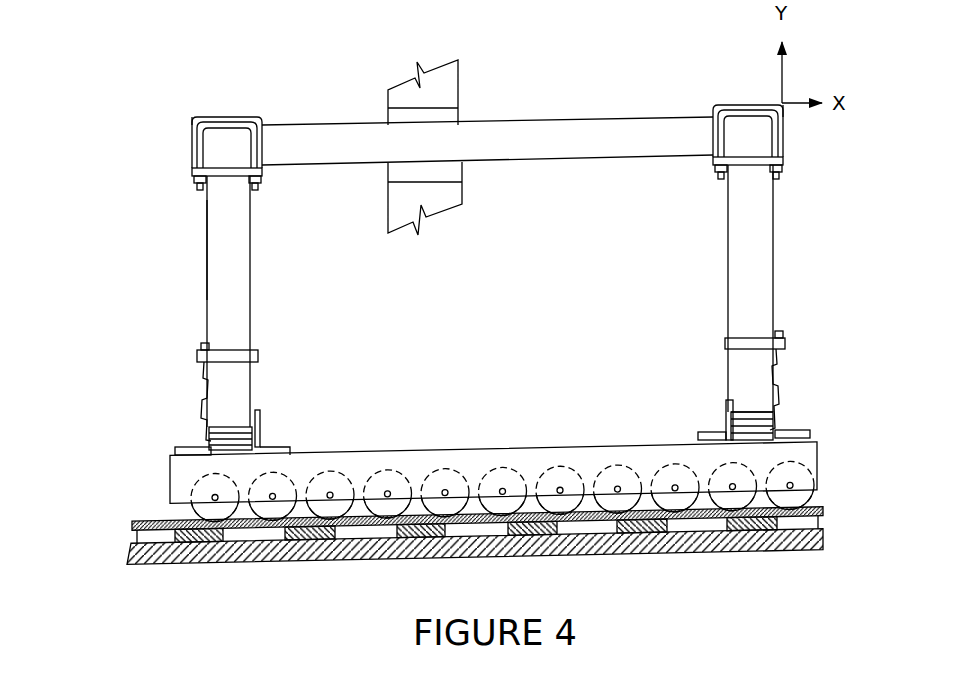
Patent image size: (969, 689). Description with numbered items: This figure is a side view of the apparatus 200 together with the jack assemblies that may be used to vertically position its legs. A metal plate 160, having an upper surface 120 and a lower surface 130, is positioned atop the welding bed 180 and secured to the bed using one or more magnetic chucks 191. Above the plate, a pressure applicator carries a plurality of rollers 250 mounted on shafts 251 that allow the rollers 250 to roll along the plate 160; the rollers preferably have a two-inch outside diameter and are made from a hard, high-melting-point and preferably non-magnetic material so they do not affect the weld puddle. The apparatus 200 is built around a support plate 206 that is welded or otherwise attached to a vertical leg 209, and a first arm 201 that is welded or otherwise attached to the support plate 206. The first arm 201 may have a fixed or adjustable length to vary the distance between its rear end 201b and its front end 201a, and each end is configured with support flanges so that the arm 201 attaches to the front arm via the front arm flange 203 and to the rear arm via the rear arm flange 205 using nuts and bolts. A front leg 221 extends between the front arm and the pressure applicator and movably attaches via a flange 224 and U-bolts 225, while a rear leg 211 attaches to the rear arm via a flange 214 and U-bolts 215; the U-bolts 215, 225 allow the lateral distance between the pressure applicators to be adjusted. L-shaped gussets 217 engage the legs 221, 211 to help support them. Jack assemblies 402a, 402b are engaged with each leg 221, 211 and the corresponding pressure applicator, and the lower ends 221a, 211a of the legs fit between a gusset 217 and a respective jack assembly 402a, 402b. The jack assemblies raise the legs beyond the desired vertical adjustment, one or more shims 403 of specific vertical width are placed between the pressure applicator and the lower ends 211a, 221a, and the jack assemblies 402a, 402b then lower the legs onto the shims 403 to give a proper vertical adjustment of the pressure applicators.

The upper surface 120 is at (158, 518).
The lower surface 130 is at (268, 537).
The metal plate 160 is at (149, 521).
The welding bed 180 is at (700, 546).
The magnetic chucks 191 is at (618, 535).
The apparatus 200 is at (191, 299).
The first arm 201 is at (587, 143).
The front end of first arm 201a is at (219, 104).
The rear end of first arm 201b is at (766, 88).
The front arm flange 203 is at (190, 125).
The rear arm flange 205 is at (740, 100).
The support plate 206 is at (457, 118).
The vertical leg 209 is at (458, 72).
The rear leg 211 is at (764, 297).
The lower end of rear leg 211a is at (758, 413).
The rear leg flange 214 is at (783, 157).
The U-bolt 215 is at (749, 110).
The L-shaped gusset 217 is at (259, 420).
The front leg 221 is at (468, 313).
The lower end of front leg 221a is at (474, 402).
The front leg flange 224 is at (192, 172).
The U-bolt 225 is at (225, 125).
The rollers 250 is at (247, 519).
The shafts 251 is at (274, 494).
The jack assembly 402a is at (194, 357).
The jack assembly 402b is at (794, 337).
The shims 403 is at (212, 441).